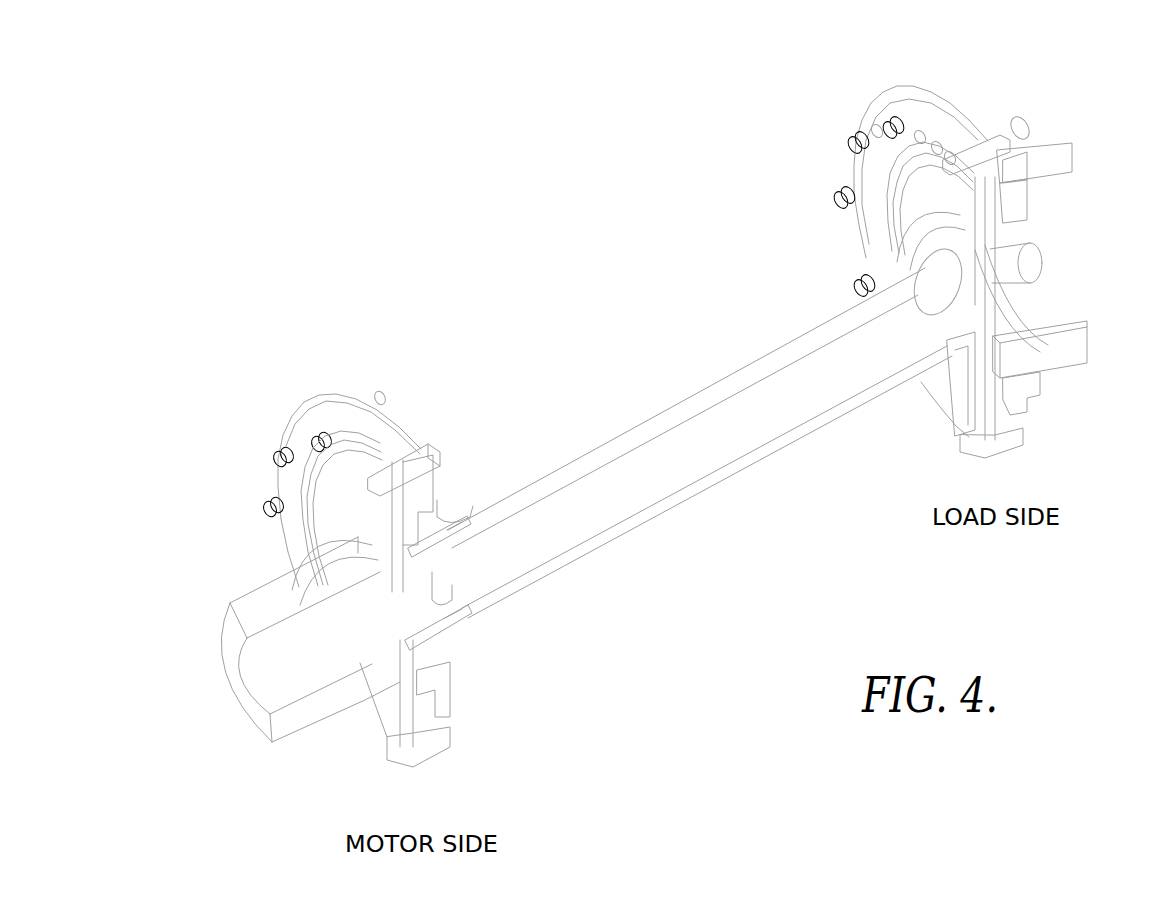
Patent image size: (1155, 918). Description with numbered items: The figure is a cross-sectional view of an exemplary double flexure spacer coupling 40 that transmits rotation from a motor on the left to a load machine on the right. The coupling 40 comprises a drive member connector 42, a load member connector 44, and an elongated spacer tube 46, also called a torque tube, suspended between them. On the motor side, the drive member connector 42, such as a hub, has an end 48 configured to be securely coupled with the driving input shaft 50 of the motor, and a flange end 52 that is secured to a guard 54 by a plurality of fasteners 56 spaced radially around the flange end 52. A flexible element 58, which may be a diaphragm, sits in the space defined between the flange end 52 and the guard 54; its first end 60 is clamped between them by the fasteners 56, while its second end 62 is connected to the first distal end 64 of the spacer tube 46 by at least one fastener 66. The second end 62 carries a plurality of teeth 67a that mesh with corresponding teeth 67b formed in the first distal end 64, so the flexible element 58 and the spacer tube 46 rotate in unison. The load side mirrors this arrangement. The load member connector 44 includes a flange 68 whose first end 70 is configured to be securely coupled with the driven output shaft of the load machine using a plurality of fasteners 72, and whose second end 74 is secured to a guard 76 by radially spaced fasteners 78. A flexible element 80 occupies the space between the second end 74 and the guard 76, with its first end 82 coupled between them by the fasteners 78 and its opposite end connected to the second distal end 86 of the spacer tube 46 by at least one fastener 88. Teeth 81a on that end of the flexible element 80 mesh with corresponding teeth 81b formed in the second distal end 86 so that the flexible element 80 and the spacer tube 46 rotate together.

The double flexure spacer coupling 40 is at (464, 303).
The drive member connector 42 is at (304, 414).
The load member connector 44 is at (940, 90).
The spacer tube 46 is at (682, 408).
The end 48 is at (289, 684).
The driving input shaft 50 is at (258, 597).
The flange end 52 is at (280, 482).
The guard 54 is at (417, 498).
The fasteners 56 is at (430, 452).
The flexible element 58 is at (402, 693).
The first end 60 is at (383, 412).
The second end 62 is at (455, 520).
The first distal end 64 is at (447, 642).
The fastener 66 is at (462, 626).
The teeth 67a is at (432, 584).
The teeth 67b is at (452, 620).
The flange 68 is at (1060, 327).
The first end 70 is at (1028, 207).
The fasteners 72 is at (1073, 158).
The second end 74 is at (988, 140).
The guard 76 is at (898, 203).
The fasteners 78 is at (863, 137).
The flexible element 80 is at (973, 397).
The teeth 81a is at (926, 323).
The teeth 81b is at (1005, 310).
The first end 82 is at (970, 140).
The second distal end 86 is at (862, 278).
The fastener 88 is at (1007, 252).